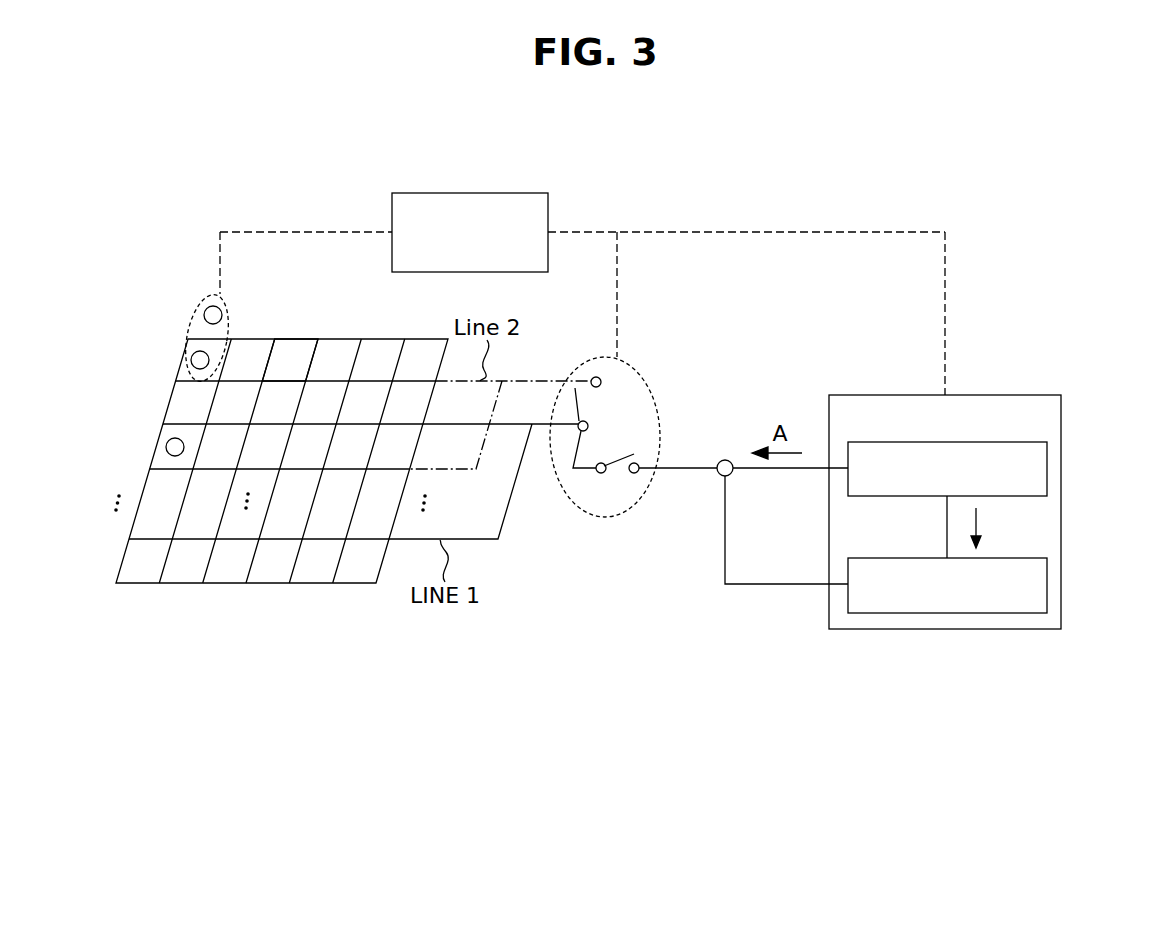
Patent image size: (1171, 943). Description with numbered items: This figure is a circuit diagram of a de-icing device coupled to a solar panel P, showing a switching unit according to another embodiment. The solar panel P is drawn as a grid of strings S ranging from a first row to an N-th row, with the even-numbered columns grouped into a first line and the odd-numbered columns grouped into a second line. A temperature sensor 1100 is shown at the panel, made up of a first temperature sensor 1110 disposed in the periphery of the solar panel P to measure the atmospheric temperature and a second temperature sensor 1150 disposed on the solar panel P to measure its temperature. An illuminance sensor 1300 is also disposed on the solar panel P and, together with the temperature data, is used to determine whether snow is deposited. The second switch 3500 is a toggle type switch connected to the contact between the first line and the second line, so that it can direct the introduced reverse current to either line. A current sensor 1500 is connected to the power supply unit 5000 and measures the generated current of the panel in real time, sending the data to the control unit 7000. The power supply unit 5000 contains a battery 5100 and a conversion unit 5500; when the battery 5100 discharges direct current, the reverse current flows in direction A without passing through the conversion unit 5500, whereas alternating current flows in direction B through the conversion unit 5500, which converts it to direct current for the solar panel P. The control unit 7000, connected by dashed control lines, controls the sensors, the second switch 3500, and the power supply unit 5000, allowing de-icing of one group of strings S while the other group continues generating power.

The strings S is at (122, 400).
The solar panel P is at (312, 339).
The temperature sensor 1100 is at (189, 332).
The first temperature sensor 1110 is at (204, 304).
The second temperature sensor 1150 is at (191, 358).
The illuminance sensor 1300 is at (166, 448).
The current sensor 1500 is at (725, 460).
The second switch 3500 is at (591, 517).
The power supply unit 5000 is at (1003, 395).
The battery 5100 is at (1047, 466).
The conversion unit 5500 is at (1047, 582).
The control unit 7000 is at (467, 193).